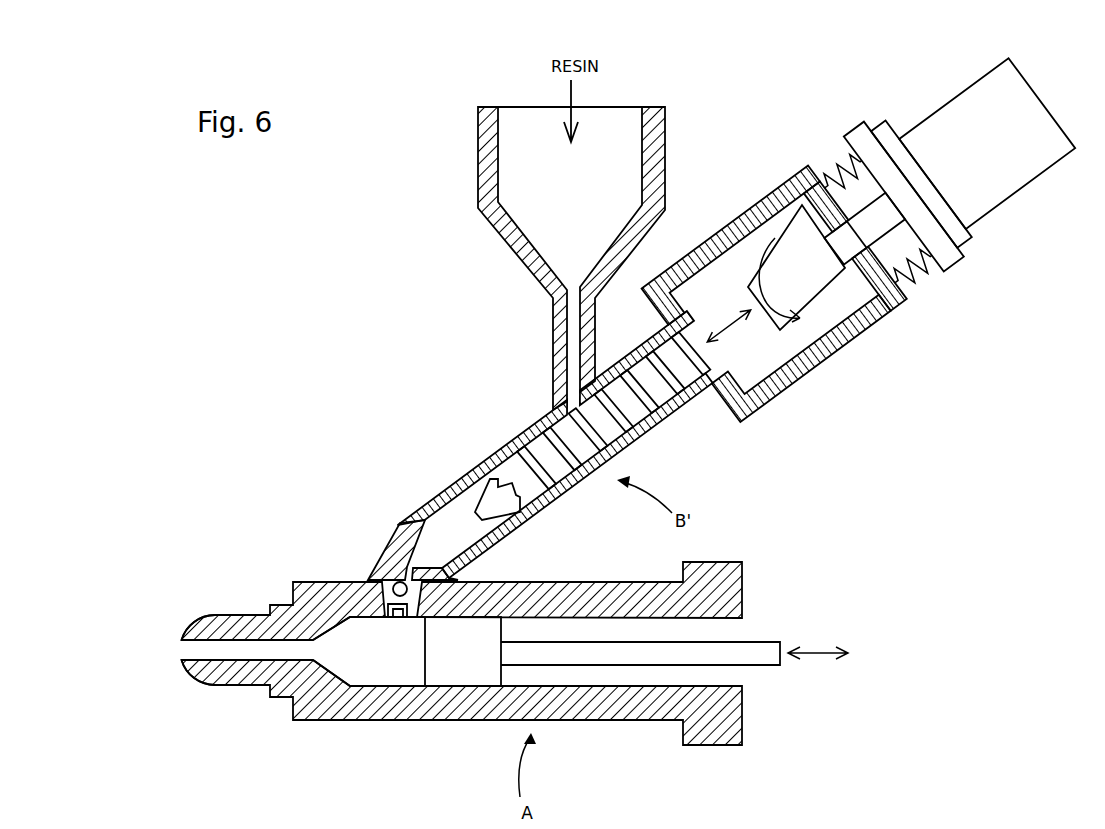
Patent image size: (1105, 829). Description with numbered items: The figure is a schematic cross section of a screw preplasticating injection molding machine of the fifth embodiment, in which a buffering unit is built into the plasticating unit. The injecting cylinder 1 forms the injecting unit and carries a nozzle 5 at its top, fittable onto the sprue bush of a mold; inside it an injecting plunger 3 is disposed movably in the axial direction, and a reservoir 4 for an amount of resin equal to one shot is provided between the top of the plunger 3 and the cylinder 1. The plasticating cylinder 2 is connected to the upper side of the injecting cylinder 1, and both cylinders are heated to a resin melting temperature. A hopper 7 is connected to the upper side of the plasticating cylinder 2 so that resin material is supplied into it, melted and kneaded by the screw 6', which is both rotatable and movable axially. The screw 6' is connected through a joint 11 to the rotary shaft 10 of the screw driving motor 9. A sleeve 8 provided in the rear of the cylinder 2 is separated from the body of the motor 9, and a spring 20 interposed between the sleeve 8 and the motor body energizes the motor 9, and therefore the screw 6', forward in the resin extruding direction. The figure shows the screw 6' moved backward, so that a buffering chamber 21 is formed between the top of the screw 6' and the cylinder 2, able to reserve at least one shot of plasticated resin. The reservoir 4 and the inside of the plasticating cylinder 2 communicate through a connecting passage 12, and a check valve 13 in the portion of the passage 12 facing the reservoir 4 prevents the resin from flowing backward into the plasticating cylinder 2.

The injecting cylinder 1 is at (618, 706).
The plasticating cylinder 2 is at (690, 410).
The injecting plunger 3 is at (463, 667).
The reservoir 4 is at (368, 680).
The nozzle 5 is at (216, 686).
The screw 6' is at (595, 456).
The hopper 7 is at (478, 160).
The sleeve 8 is at (857, 347).
The screw driving motor 9 is at (1029, 168).
The rotary shaft 10 is at (867, 217).
The joint 11 is at (800, 250).
The connecting passage 12 is at (392, 537).
The check valve 13 is at (383, 607).
The spring 20 is at (925, 297).
The buffering chamber 21 is at (442, 537).